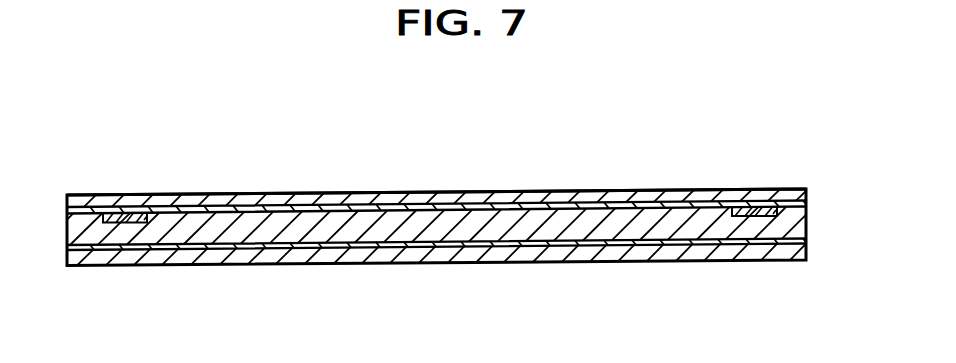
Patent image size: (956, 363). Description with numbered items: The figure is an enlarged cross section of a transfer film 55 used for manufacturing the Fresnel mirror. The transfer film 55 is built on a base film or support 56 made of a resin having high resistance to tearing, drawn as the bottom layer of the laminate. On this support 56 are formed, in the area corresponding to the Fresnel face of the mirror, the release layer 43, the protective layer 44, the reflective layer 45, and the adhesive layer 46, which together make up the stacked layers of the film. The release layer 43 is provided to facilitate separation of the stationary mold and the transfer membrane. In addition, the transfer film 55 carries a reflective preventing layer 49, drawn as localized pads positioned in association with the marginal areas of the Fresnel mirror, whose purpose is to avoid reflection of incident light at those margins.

The release layer 43 is at (787, 247).
The protective layer 44 is at (455, 232).
The reflective layer 45 is at (808, 203).
The adhesive layer 46 is at (790, 200).
The reflective preventing layer 49 is at (128, 213).
The transfer film 55 is at (446, 157).
The support 56 is at (115, 258).